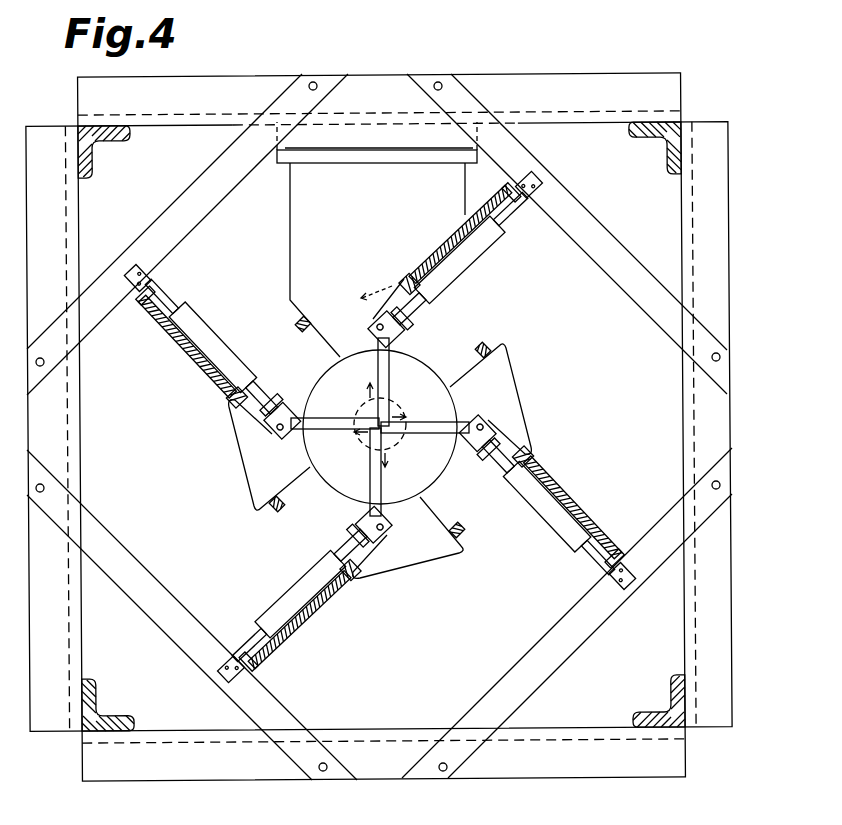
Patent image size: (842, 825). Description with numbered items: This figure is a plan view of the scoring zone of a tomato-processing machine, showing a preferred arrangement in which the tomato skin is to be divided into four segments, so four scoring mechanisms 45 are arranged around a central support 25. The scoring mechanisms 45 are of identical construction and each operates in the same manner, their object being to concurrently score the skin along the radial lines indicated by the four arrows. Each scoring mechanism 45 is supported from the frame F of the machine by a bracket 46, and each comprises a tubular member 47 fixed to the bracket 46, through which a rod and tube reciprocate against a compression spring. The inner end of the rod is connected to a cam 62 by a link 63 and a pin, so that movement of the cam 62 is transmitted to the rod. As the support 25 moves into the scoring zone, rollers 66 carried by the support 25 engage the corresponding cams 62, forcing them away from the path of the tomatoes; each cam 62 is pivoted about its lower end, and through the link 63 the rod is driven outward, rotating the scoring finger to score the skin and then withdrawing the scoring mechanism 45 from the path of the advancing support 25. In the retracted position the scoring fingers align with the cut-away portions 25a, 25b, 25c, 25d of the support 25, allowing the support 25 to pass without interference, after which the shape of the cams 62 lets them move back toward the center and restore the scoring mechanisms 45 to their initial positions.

The frame F is at (101, 312).
The support 25 is at (386, 207).
The cut-away portion 25a is at (396, 333).
The cut-away portion 25b is at (455, 452).
The cut-away portion 25c is at (347, 502).
The cut-away portion 25d is at (294, 400).
The scoring mechanism 45 is at (496, 282).
The bracket 46 is at (522, 196).
The tubular member 47 is at (445, 278).
The cam 62 is at (456, 223).
The link 63 is at (501, 226).
The roller 66 is at (404, 280).